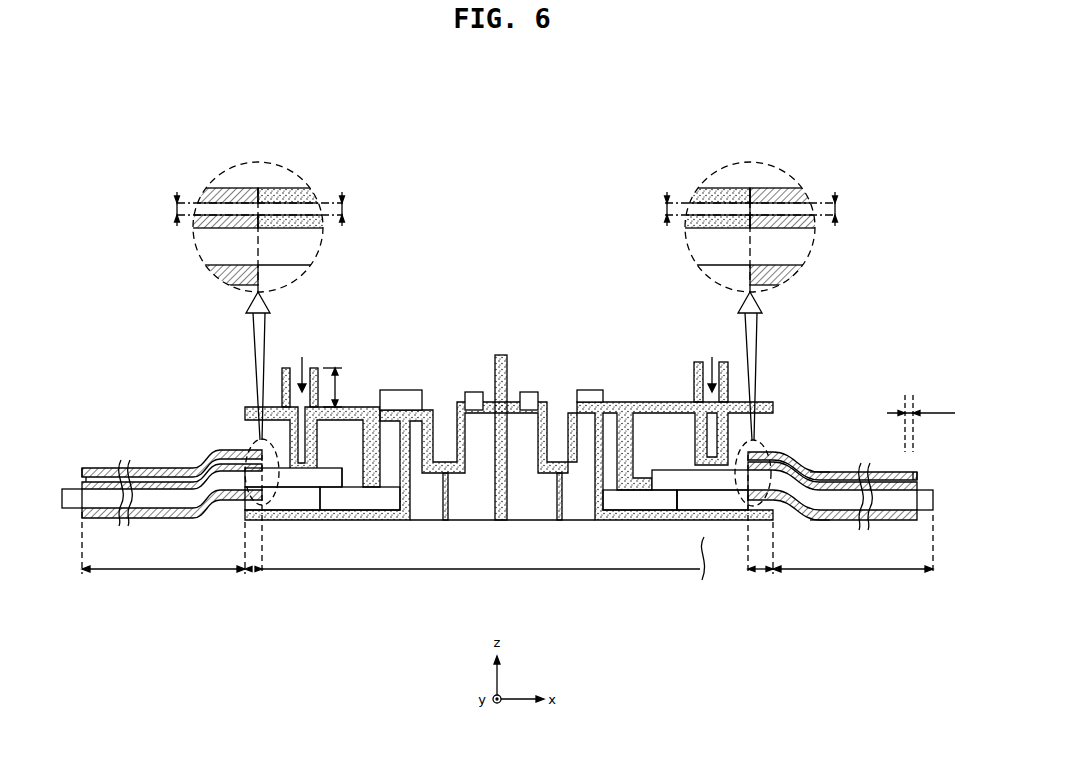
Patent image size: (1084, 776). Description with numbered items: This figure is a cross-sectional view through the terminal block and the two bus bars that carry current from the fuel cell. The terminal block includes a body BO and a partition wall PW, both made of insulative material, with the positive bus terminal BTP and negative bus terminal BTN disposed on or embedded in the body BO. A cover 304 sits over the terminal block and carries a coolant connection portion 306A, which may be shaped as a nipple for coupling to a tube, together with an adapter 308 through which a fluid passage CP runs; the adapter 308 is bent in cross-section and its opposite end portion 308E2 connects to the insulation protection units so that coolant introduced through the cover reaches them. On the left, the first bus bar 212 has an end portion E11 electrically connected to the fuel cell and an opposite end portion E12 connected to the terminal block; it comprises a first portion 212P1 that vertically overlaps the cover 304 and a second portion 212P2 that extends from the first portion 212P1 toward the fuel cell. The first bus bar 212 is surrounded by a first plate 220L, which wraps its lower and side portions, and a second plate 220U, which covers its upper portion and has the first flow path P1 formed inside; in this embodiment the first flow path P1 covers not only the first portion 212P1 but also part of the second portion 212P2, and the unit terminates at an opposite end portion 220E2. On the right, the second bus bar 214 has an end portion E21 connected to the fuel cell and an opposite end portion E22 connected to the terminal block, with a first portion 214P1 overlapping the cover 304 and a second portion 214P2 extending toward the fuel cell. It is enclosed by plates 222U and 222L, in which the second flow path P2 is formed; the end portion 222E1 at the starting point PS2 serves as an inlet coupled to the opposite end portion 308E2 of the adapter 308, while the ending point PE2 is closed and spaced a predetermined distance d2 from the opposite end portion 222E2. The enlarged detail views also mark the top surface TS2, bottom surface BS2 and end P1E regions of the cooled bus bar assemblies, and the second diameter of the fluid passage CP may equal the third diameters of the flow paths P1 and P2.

The cover 304 is at (377, 410).
The coolant connection portion 306A is at (348, 387).
The partition wall PW is at (501, 354).
The positive bus terminal BTP is at (474, 392).
The negative bus terminal BTN is at (530, 392).
The first bus bar 212 is at (150, 496).
The second bus bar 214 is at (792, 492).
The second plate 220U is at (85, 468).
The first plate 220L is at (96, 518).
The first plate 222U is at (880, 472).
The second plate 222L is at (892, 521).
The end portion E11 is at (60, 500).
The opposite end portion E12 is at (344, 482).
The end portion E21 is at (937, 512).
The opposite end portion E22 is at (645, 484).
The opposite end portion 220E2 is at (82, 474).
The end portion 222E1 is at (752, 197).
The opposite end portion 222E2 is at (918, 480).
The first flow path P1 is at (246, 456).
The second flow path P2 is at (750, 455).
The end of first portion P1E is at (88, 480).
The ending point PE2 is at (896, 478).
The starting point PS2 is at (745, 208).
The top surface of second lead TS2 is at (820, 476).
The bottom surface of second lead BS2 is at (821, 506).
The body BO is at (680, 562).
The fluid passage CP is at (260, 210).
The adapter 308 is at (281, 190).
The opposite end portion 308E2 is at (752, 212).
The predetermined distance d2 is at (921, 423).
The first portion 212P1 is at (253, 574).
The second portion 212P2 is at (163, 551).
The first portion 214P1 is at (763, 572).
The second portion 214P2 is at (853, 552).